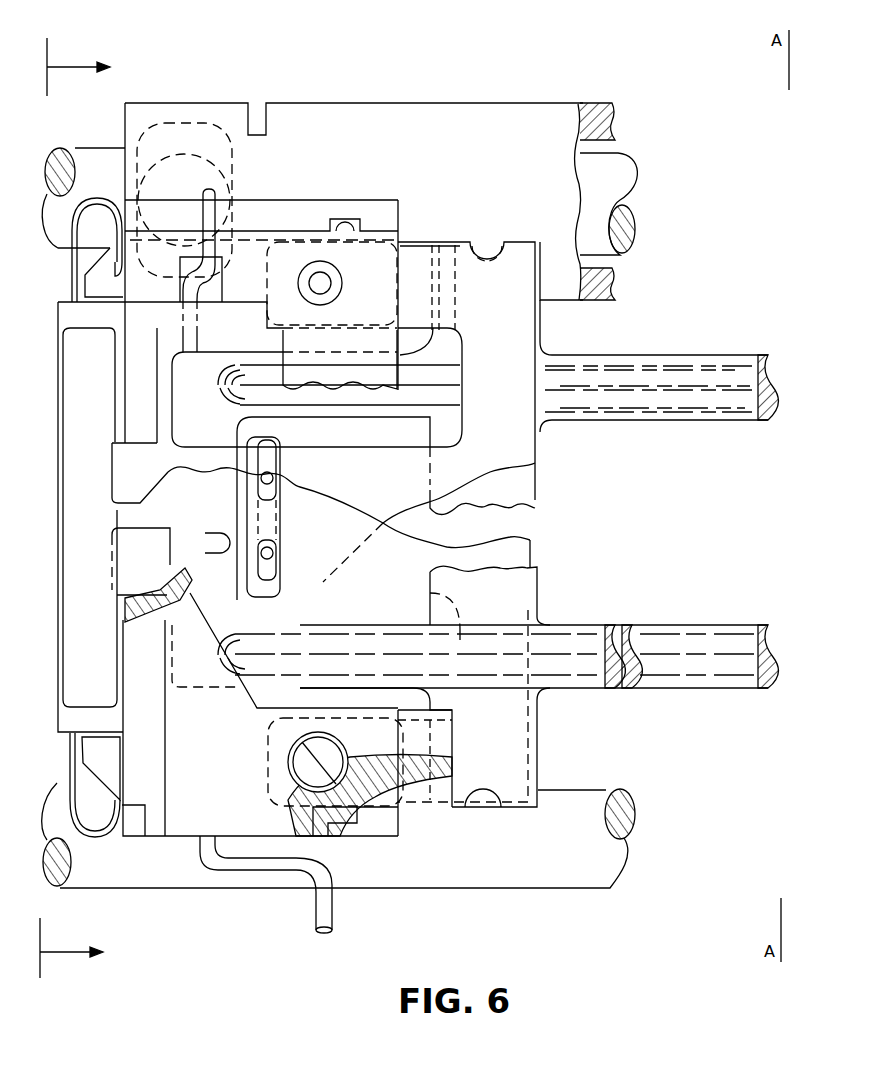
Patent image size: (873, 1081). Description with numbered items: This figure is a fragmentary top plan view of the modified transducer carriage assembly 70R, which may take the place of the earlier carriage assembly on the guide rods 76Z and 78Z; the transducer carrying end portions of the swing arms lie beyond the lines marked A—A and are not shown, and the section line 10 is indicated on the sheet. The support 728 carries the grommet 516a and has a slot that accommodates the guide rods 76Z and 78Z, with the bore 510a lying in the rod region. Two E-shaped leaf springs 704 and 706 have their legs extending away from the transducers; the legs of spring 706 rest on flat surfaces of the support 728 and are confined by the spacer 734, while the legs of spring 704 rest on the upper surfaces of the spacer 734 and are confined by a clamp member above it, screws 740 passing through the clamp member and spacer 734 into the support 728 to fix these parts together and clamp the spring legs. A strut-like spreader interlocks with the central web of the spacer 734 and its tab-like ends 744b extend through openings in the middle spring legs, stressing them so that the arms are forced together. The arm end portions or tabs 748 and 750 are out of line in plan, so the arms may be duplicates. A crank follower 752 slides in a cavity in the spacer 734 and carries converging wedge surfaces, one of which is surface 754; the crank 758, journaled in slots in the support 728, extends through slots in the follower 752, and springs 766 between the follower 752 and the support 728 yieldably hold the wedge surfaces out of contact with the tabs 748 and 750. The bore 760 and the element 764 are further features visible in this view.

The section line 10- 10 is at (75, 507).
The modified transducer carriage assembly 70R is at (318, 84).
The grommet 516a is at (183, 130).
The support 728 is at (430, 103).
The bore 510a is at (589, 103).
The guide rod 76Z is at (92, 147).
The springs 766 is at (95, 197).
The crank 758 is at (212, 198).
The spacer 734 is at (402, 268).
The E-shaped leaf spring 706 is at (523, 242).
The upper rod bore 760 is at (190, 340).
The arm end portion or tab 750 is at (160, 470).
The tab-like ends 744b is at (280, 480).
The wedge surface 754 is at (103, 525).
The arm end portion or tab 748 is at (160, 565).
The E-shaped leaf spring 704 is at (532, 544).
The crank follower 752 is at (105, 725).
The screws 740 is at (290, 764).
The guide rod 78Z is at (585, 790).
The tube 764 is at (303, 917).